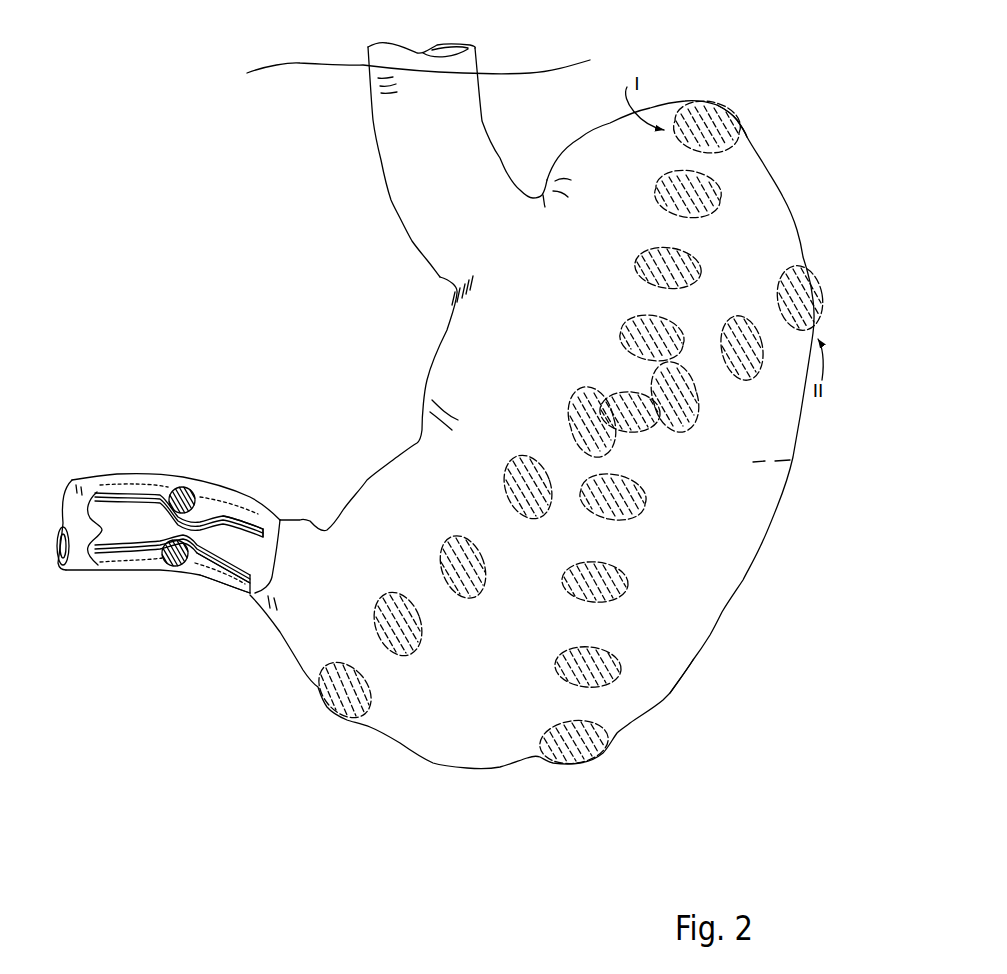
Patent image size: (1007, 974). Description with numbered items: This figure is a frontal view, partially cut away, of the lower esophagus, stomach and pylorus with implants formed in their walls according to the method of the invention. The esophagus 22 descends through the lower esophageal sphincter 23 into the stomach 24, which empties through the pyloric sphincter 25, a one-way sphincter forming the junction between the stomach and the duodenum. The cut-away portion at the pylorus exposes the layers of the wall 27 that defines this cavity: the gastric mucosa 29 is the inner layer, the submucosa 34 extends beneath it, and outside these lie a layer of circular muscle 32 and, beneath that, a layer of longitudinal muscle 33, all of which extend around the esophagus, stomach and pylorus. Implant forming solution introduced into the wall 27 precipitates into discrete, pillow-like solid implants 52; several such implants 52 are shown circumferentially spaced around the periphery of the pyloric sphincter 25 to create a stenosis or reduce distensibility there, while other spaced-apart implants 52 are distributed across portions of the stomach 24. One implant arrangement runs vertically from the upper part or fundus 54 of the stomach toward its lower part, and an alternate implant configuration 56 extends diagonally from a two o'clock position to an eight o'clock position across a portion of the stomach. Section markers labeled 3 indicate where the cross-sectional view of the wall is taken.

The esophagus 22 is at (373, 118).
The lower esophageal sphincter 23 is at (440, 277).
The stomach 24 is at (733, 530).
The pyloric sphincter 25 is at (195, 482).
The wall 27 is at (125, 497).
The gastric mucosa 29 is at (250, 533).
The circular muscle 32 is at (200, 573).
The longitudinal muscle 33 is at (173, 577).
The submucosa 34 is at (232, 503).
The implant 52 is at (697, 197).
The fundus 54 is at (749, 135).
The implant configuration 56 is at (667, 706).
The section line for FIG. 3 is at (692, 102).